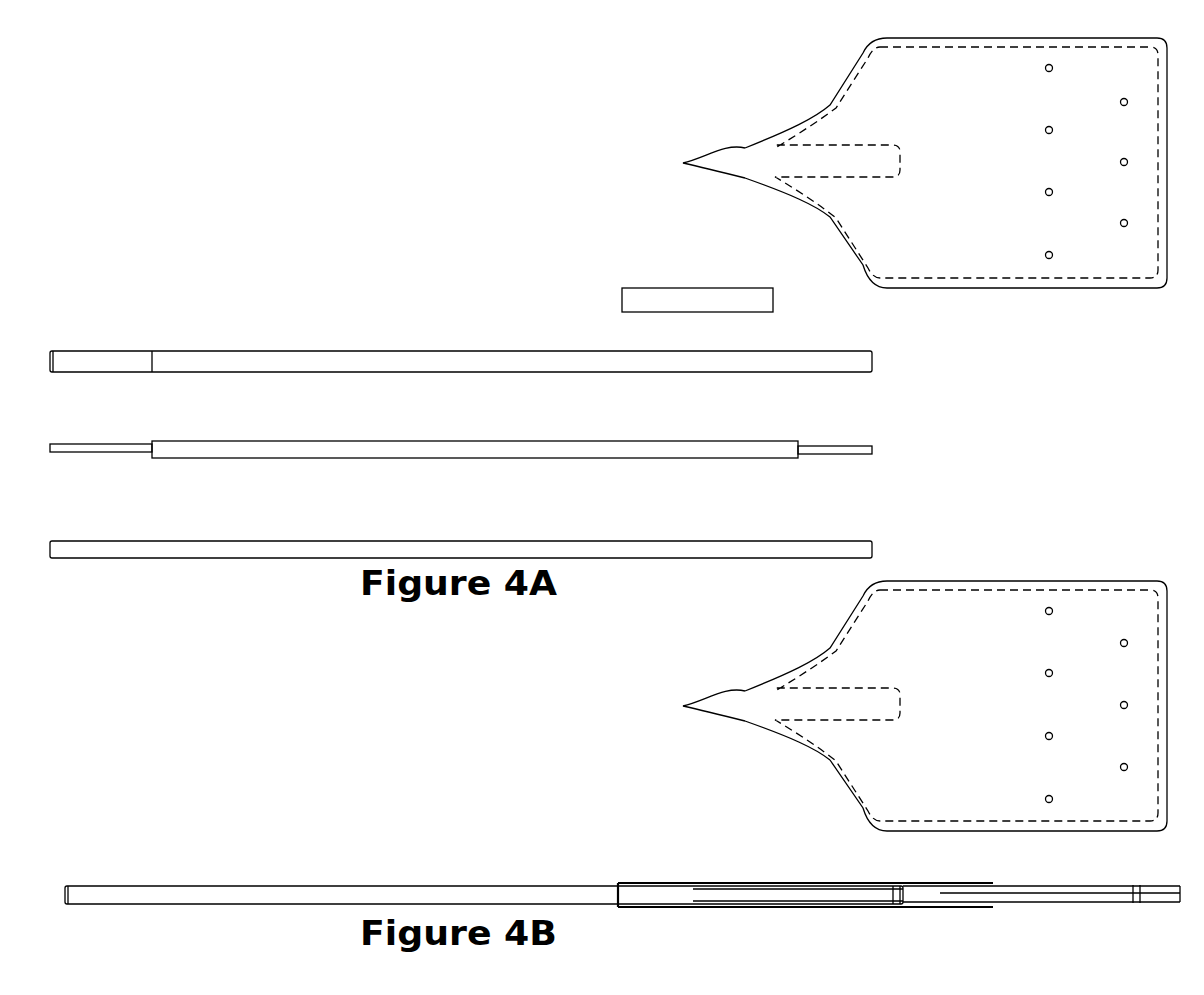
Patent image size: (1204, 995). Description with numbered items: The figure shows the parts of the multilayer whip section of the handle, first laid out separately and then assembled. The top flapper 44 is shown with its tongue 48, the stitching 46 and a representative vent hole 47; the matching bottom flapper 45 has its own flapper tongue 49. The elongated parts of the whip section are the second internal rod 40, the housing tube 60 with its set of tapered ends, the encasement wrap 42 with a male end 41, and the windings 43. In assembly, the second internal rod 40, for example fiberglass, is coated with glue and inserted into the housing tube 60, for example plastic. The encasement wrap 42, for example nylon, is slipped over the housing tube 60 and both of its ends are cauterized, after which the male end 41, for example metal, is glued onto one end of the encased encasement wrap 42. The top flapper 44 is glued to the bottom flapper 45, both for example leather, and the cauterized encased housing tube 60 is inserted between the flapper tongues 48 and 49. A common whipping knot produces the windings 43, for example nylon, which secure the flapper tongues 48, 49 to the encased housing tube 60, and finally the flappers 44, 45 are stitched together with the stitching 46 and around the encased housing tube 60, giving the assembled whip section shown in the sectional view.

In FIG. 4A, the second internal rod 40 is at (303, 558).
In FIG. 4B, the second internal rod 40 is at (207, 895).
In FIG. 4A, the male end 41 is at (93, 350).
In FIG. 4B, the male end 41 is at (108, 884).
In FIG. 4A, the encasement wrap 42 is at (298, 352).
In FIG. 4B, the encasement wrap 42 is at (433, 885).
In FIG. 4A, the windings 43 is at (668, 285).
In FIG. 4B, the windings 43 is at (672, 881).
In FIG. 4A, the top flapper 44 is at (820, 107).
In FIG. 4B, the top flapper 44 is at (1065, 886).
In FIG. 4B, the bottom flapper 45 is at (843, 792).
In FIG. 4A, the stitching 46 is at (1000, 278).
In FIG. 4B, the stitching 46 is at (977, 588).
In FIG. 4A, the vent hole 47 is at (1045, 133).
In FIG. 4B, the vent hole 47 is at (1047, 680).
In FIG. 4A, the tongue 48 is at (737, 148).
In FIG. 4B, the flapper tongue 49 is at (740, 690).
In FIG. 4A, the housing tube 60 is at (317, 462).